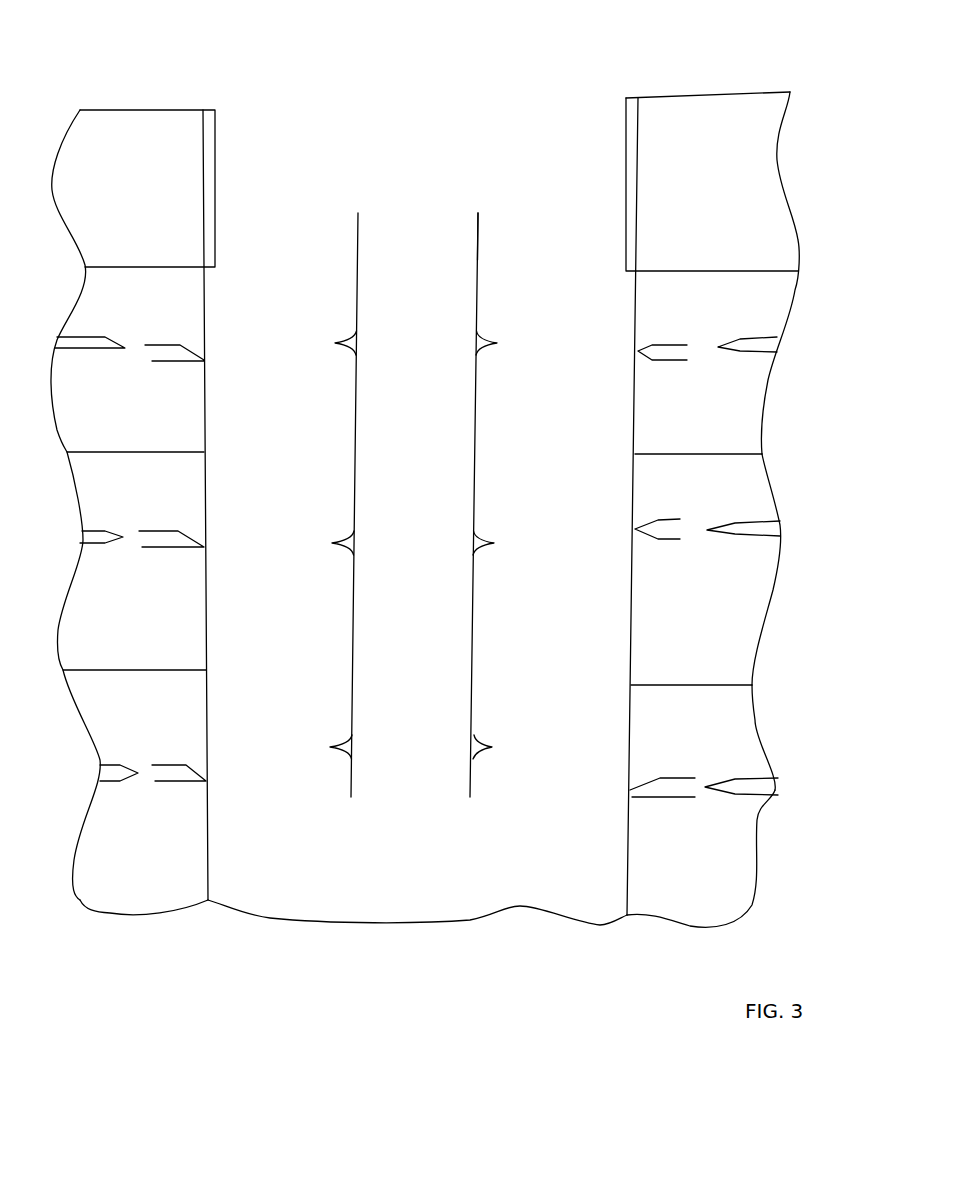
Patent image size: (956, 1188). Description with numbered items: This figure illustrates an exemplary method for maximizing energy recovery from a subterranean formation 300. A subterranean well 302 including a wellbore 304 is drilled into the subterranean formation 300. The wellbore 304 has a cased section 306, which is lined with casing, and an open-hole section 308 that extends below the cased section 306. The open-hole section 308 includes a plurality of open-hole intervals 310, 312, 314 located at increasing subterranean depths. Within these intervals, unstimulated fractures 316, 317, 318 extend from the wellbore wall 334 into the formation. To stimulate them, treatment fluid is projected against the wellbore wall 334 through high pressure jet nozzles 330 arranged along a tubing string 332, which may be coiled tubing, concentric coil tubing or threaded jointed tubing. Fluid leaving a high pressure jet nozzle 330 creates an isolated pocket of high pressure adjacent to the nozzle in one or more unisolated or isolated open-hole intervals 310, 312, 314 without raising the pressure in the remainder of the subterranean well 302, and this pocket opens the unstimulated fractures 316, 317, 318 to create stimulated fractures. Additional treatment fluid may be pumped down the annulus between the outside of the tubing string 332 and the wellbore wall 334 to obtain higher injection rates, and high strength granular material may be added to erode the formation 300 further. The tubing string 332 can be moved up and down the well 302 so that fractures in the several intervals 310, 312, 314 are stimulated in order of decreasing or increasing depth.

The subterranean formation 300 is at (195, 910).
The subterranean well 302 is at (337, 121).
The wellbore 304 is at (491, 148).
The cased section 306 is at (240, 206).
The open-hole section 308 is at (285, 383).
The open-hole interval 310 is at (640, 413).
The open-hole interval 312 is at (650, 590).
The open-hole interval 314 is at (645, 758).
The unstimulated fracture 316 is at (638, 351).
The unstimulated fracture 317 is at (635, 529).
The unstimulated fracture 318 is at (630, 790).
The high pressure jet nozzle 330 is at (483, 352).
The tubing string 332 is at (482, 270).
The wellbore wall 334 is at (632, 660).